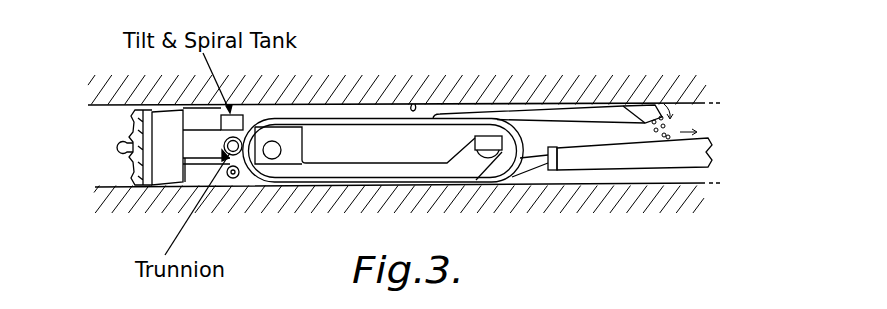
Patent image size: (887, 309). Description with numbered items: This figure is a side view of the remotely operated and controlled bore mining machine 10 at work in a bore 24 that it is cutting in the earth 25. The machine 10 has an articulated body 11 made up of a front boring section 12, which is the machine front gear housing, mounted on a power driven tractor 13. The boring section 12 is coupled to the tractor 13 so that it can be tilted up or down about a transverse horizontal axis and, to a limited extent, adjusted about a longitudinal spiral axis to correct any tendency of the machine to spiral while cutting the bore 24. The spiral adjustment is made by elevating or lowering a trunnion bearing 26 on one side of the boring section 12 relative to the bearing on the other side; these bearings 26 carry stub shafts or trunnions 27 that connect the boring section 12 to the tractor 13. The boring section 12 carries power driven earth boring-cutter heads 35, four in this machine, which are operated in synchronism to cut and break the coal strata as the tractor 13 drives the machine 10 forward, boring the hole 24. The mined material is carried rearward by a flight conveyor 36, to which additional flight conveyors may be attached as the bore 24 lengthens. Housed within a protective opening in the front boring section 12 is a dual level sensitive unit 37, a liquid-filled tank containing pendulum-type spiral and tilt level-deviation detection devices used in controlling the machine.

The bore mining machine 10 is at (371, 118).
The articulated body 11 is at (318, 173).
The front boring section 12 is at (160, 180).
The power driven tractor 13 is at (470, 128).
The bore 24 is at (413, 104).
The earth 25 is at (110, 190).
The trunnion bearing 26 is at (228, 157).
The trunnion 27 is at (237, 143).
The boring-cutter head 35 is at (143, 130).
The flight conveyor 36 is at (586, 120).
The dual level sensitive unit 37 is at (229, 128).